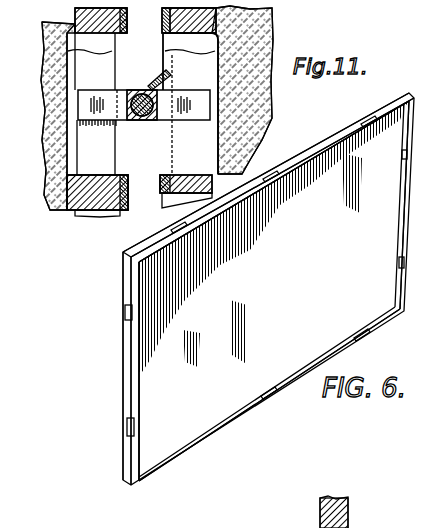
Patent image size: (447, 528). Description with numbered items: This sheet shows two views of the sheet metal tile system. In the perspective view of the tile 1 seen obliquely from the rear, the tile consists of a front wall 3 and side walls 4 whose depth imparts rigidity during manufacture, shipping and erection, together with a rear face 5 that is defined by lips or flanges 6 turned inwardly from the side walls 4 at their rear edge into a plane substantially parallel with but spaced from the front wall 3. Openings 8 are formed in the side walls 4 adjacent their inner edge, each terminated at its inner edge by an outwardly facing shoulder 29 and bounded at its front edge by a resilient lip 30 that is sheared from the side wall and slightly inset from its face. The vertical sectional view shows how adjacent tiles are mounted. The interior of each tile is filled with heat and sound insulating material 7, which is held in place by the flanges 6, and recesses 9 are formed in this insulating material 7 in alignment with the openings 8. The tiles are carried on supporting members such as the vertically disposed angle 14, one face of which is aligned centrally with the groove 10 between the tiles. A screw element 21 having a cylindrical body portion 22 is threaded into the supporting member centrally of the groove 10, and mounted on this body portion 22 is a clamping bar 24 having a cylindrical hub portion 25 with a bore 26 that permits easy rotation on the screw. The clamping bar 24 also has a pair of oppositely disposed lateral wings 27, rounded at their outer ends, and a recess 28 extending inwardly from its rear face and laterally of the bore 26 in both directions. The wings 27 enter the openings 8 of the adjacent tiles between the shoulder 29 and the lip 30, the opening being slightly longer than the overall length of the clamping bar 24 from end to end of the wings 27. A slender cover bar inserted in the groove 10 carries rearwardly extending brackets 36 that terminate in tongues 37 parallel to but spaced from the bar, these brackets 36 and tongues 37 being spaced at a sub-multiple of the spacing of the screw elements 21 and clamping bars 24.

In FIG. 6, the tile 1 is at (278, 407).
In FIG. 6, the front wall 3 is at (274, 236).
In FIG. 11, the side walls 4 is at (145, 20).
In FIG. 6, the side walls 4 is at (330, 145).
In FIG. 6, the rear face 5 is at (133, 348).
In FIG. 11, the flanges 6 is at (72, 9).
In FIG. 6, the flanges 6 is at (300, 164).
In FIG. 11, the insulating material 7 is at (50, 200).
In FIG. 11, the openings 8 is at (160, 90).
In FIG. 6, the openings 8 is at (368, 117).
In FIG. 11, the recesses 9 is at (146, 172).
In FIG. 11, the groove 10 is at (164, 167).
In FIG. 11, the angle 14 is at (143, 210).
In FIG. 11, the screw element 21 is at (139, 117).
In FIG. 11, the cylindrical body portion 22 is at (170, 128).
In FIG. 11, the clamping bar 24 is at (190, 97).
In FIG. 11, the hub portion 25 is at (96, 147).
In FIG. 11, the bore 26 is at (98, 117).
In FIG. 11, the lateral wings 27 is at (82, 110).
In FIG. 11, the recess 28 is at (160, 88).
In FIG. 11, the shoulder 29 is at (90, 80).
In FIG. 6, the lip 30 is at (125, 308).
In FIG. 11, the brackets 36 is at (148, 72).
In FIG. 11, the tongues 37 is at (173, 130).